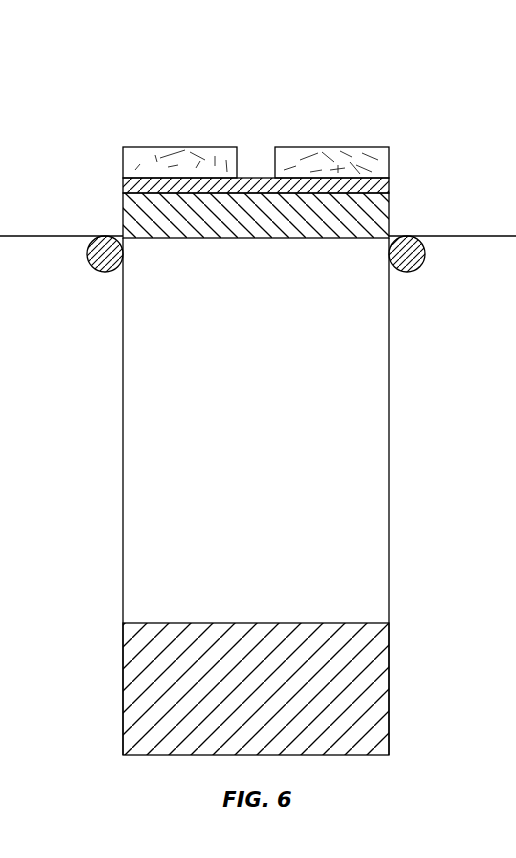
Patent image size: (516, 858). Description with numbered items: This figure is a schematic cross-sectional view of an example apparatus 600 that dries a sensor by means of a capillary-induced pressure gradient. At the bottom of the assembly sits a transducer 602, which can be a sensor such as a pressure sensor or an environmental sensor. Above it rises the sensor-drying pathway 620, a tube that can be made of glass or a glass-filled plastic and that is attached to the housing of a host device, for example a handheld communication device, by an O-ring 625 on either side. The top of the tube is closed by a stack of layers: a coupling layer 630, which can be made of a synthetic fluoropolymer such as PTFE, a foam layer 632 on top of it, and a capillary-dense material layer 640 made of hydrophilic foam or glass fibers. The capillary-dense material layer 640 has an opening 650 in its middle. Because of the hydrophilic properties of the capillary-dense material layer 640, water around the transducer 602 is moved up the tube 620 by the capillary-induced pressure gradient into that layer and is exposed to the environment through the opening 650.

The apparatus 600 is at (97, 96).
The transducer 602 is at (244, 698).
The sensor-drying pathway 620 is at (390, 448).
The O-ring 625 is at (408, 236).
The coupling layer 630 is at (242, 226).
The foam layer 632 is at (123, 185).
The capillary-dense material layer 640 is at (342, 147).
The opening 650 is at (256, 144).